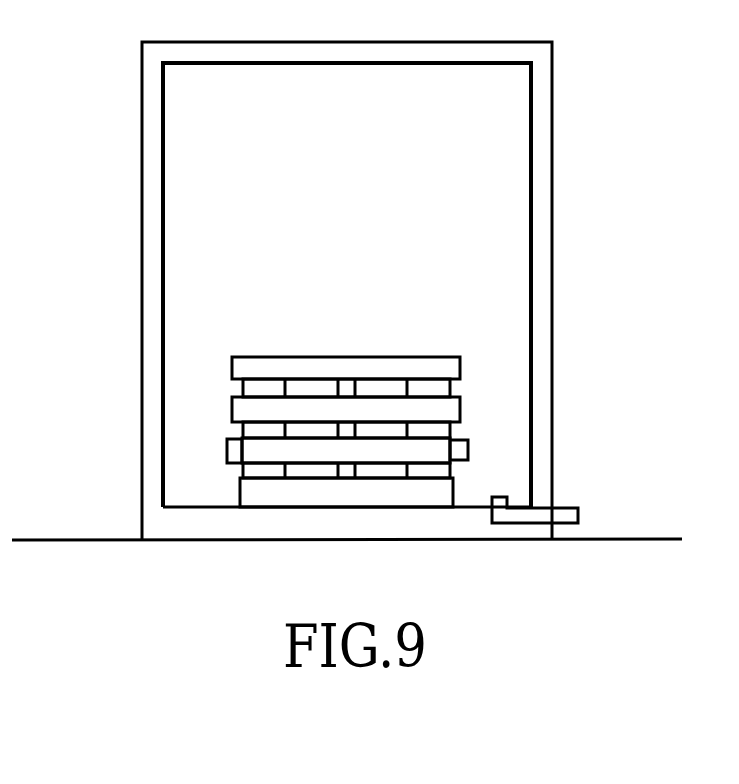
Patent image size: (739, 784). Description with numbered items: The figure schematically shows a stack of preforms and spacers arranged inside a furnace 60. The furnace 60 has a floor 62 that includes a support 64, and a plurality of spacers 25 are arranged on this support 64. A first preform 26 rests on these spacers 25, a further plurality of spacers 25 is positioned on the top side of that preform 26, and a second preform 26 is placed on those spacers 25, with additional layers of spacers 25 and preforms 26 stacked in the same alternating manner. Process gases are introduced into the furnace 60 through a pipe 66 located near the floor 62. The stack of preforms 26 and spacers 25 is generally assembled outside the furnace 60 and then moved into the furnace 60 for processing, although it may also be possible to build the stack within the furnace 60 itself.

The spacers 25 is at (243, 388).
The preform 26 is at (232, 368).
The furnace 60 is at (493, 187).
The floor 62 is at (197, 507).
The support 64 is at (410, 493).
The pipe 66 is at (515, 520).